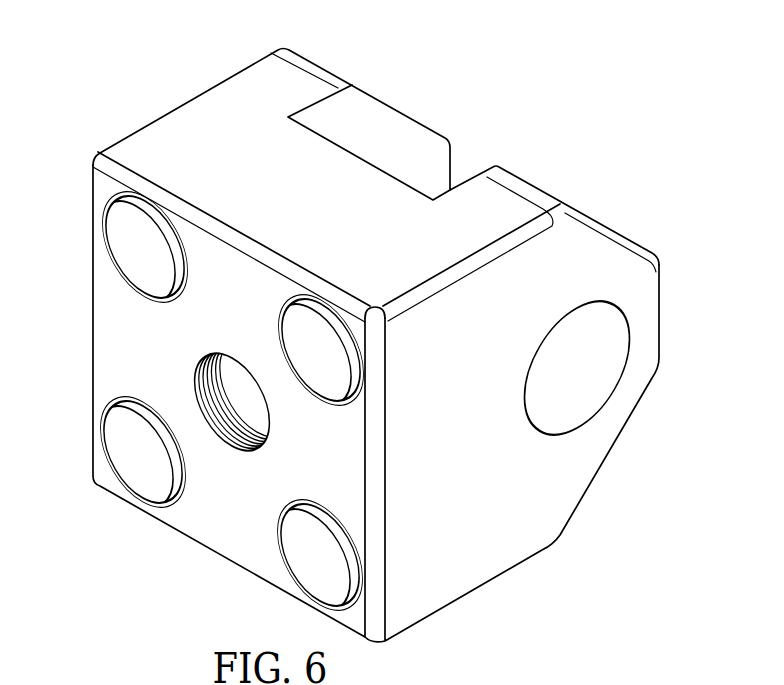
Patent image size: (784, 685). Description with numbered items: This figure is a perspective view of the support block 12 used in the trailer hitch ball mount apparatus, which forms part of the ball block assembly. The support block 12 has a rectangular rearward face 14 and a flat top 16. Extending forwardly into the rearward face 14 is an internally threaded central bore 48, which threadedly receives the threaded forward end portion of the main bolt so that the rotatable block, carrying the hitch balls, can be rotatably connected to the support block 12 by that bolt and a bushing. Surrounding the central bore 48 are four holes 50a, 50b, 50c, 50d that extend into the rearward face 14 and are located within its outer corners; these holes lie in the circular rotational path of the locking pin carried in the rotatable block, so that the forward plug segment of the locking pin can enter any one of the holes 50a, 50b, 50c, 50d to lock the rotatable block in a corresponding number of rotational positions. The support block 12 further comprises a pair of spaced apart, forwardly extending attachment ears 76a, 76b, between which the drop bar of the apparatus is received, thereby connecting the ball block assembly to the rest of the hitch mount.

The support block 12 is at (549, 110).
The rearward face 14 is at (103, 322).
The flat top 16 is at (193, 115).
The internally threaded central bore 48 is at (199, 375).
The hole 50a is at (319, 373).
The hole 50b is at (322, 573).
The hole 50c is at (145, 472).
The hole 50d is at (130, 242).
The attachment ear 76a is at (652, 324).
The attachment ear 76b is at (294, 80).